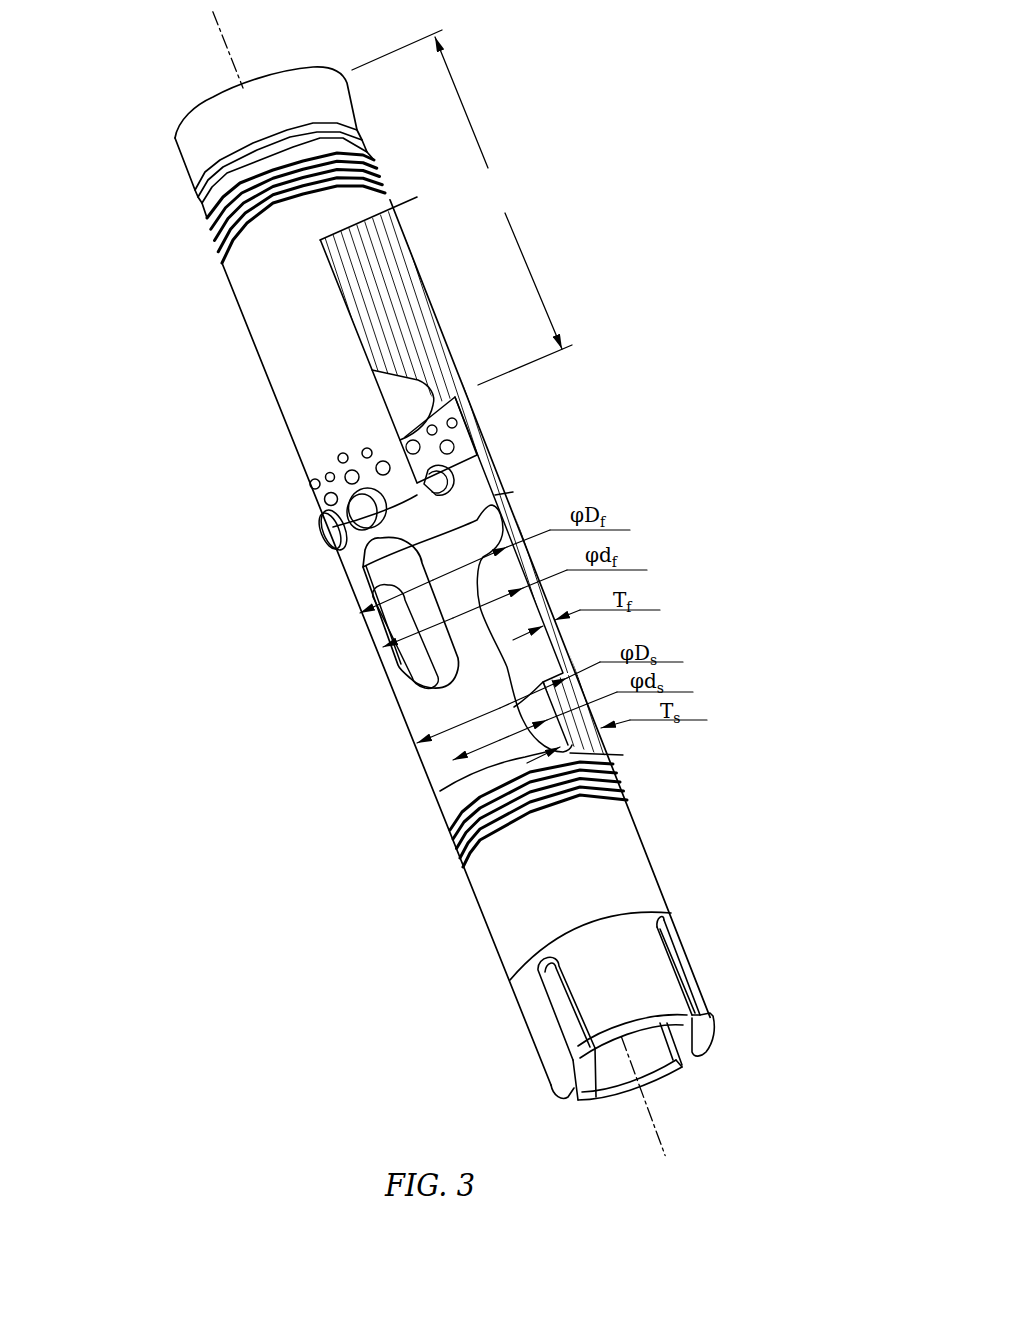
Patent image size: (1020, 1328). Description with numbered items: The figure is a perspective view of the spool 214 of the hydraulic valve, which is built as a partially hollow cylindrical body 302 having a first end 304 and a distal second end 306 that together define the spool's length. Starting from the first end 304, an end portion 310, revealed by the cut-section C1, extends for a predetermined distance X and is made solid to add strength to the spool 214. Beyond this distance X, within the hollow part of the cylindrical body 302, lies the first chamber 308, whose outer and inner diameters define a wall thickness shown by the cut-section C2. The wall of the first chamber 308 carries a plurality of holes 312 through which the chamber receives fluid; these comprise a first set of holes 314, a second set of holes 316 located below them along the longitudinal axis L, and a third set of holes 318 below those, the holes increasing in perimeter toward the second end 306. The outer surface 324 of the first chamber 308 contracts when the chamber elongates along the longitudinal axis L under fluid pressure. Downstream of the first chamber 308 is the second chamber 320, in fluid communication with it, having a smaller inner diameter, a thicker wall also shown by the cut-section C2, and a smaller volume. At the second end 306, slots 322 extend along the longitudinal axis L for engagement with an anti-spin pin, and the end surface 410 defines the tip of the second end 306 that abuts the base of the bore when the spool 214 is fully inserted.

The spool 214 is at (626, 122).
The cylindrical body 302 is at (268, 313).
The first end 304 is at (186, 178).
The second end 306 is at (708, 985).
The first chamber 308 is at (400, 687).
The end portion 310 is at (405, 263).
The plurality of holes 312 is at (296, 607).
The first set of holes 314 is at (313, 487).
The second set of holes 316 is at (400, 513).
The third set of holes 318 is at (373, 590).
The second chamber 320 is at (445, 787).
The slot 322 is at (680, 1043).
The outer surface 324 is at (258, 363).
The end surface 410 is at (623, 1100).
The longitudinal axis L is at (230, 50).
The cut-section C1 is at (408, 200).
The cut-section C2 is at (618, 758).
The predetermined distance X is at (462, 207).